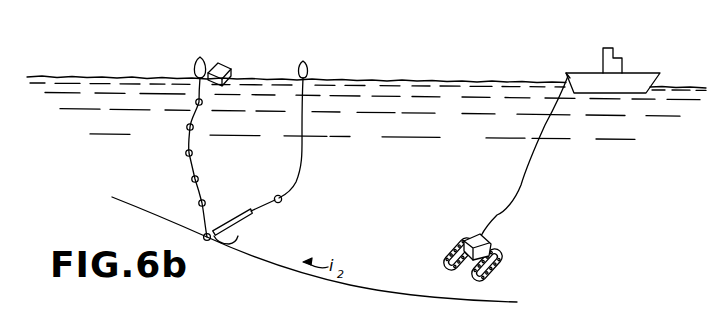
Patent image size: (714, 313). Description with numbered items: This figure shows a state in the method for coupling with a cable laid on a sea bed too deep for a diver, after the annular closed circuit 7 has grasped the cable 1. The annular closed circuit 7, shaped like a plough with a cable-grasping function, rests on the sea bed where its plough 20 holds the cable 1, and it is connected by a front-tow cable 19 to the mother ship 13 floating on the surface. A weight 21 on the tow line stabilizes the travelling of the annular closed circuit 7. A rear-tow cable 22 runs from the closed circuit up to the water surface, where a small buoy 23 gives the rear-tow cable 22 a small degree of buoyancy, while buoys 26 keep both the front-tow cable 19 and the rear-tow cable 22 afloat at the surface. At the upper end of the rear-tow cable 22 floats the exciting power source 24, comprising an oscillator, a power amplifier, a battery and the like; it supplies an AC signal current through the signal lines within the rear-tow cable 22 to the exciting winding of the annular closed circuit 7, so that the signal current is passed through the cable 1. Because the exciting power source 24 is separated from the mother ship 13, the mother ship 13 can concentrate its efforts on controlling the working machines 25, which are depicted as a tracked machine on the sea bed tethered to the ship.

The cable 1 is at (376, 288).
The annular closed circuit 7 is at (222, 267).
The mother ship 13 is at (635, 73).
The front-tow cable 19 is at (304, 152).
The plough 20 is at (238, 241).
The weight 21 is at (281, 202).
The rear-tow cable 22 is at (196, 164).
The buoy 23 is at (187, 152).
The exciting power source 24 is at (226, 67).
The working machines 25 is at (491, 240).
The buoys 26 is at (198, 57).